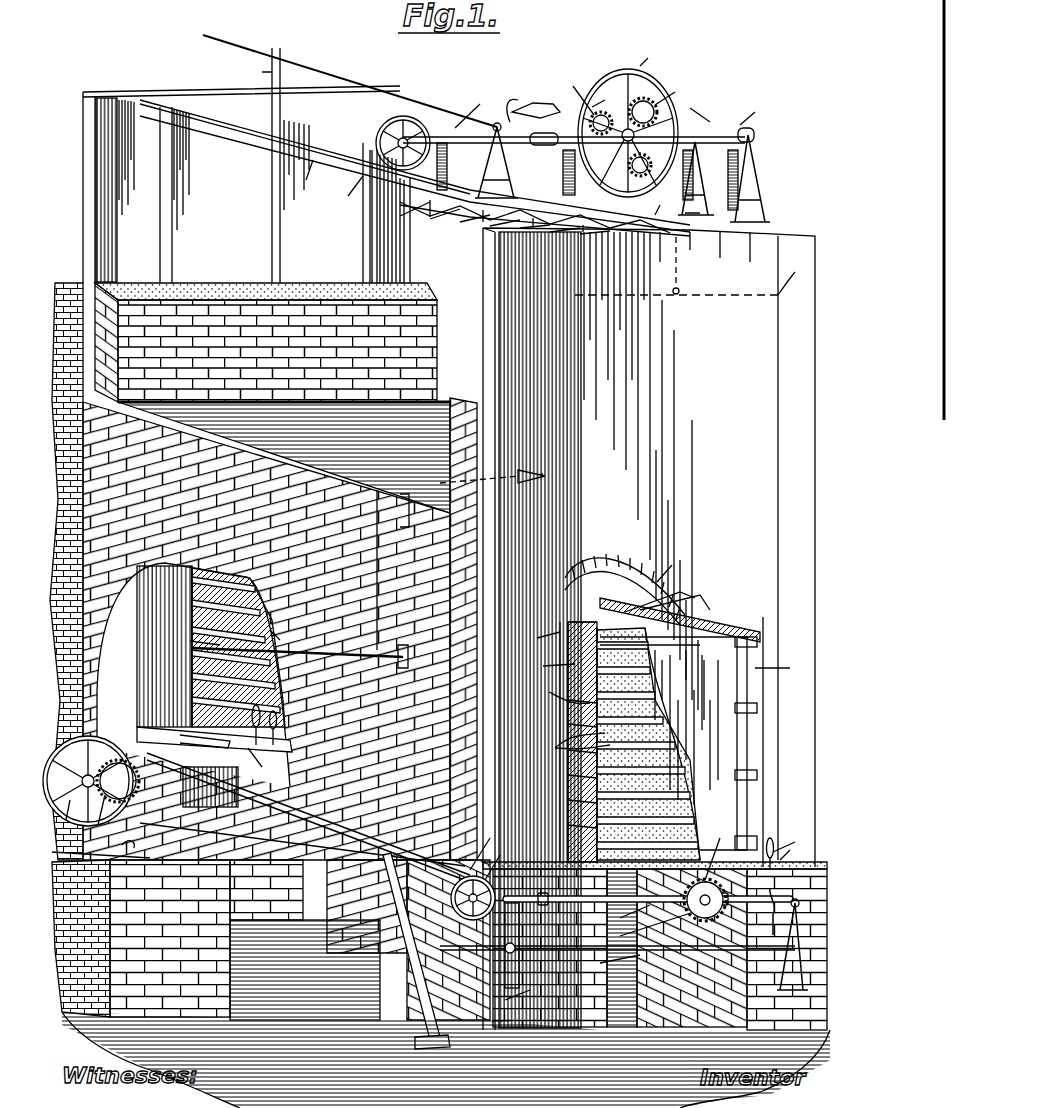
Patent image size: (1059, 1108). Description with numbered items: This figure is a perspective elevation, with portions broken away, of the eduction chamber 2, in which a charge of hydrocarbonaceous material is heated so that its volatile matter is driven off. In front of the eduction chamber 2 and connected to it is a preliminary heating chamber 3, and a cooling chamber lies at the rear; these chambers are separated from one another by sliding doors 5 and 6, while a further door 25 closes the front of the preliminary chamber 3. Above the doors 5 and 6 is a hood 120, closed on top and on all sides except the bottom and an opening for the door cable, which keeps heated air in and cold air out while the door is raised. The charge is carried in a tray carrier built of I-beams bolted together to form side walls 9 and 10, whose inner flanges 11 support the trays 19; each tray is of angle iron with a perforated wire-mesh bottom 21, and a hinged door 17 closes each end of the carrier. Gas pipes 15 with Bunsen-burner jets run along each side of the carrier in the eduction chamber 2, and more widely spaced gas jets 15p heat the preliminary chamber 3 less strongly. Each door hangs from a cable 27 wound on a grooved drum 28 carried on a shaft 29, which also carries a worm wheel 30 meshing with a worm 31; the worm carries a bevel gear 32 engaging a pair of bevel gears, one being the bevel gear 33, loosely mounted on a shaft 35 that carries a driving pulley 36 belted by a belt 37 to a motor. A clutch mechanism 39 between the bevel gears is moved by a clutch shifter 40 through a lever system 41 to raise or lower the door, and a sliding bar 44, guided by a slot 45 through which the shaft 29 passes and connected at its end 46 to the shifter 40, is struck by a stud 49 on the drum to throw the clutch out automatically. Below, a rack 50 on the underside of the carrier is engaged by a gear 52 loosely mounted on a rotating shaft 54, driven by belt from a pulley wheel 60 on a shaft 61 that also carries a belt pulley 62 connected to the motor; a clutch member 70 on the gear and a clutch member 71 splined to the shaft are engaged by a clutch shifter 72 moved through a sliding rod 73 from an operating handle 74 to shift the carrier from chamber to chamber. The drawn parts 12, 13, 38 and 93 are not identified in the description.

The eduction chamber 2 is at (625, 588).
The preliminary heating chamber 3 is at (305, 651).
The door 5 is at (193, 675).
The door 6 is at (649, 629).
The side wall 9 is at (700, 742).
The side wall 10 is at (563, 742).
The inner flanges 11 is at (564, 755).
The rod 12 is at (369, 569).
The grate 13 is at (191, 660).
The gas pipes 15 is at (214, 756).
The gas jets 15p is at (788, 849).
The door 17 is at (686, 727).
The trays 19 is at (614, 744).
The perforated bottom 21 is at (680, 618).
The door 25 is at (667, 596).
The cables 27 is at (457, 128).
The cable drum 28 is at (701, 109).
The shaft 29 is at (749, 164).
The worm wheel 30 is at (661, 101).
The worm 31 is at (679, 178).
The bevel gear 32 is at (544, 156).
The bevel gear 33 is at (506, 160).
The shaft 35 is at (574, 115).
The driving pulley 36 is at (347, 194).
The belt 37 is at (363, 157).
The pulley 38 is at (485, 881).
The clutch mechanism 39 is at (489, 848).
The clutch shifter 40 is at (536, 108).
The lever system 41 is at (532, 325).
The sliding bar 44 is at (628, 119).
The slot 45 is at (644, 165).
The end of sliding bar 46 is at (519, 102).
The stud 49 is at (580, 102).
The rack 50 is at (792, 889).
The gear 52 is at (602, 945).
The rotating shaft 54 is at (648, 908).
The pulley wheel 60 is at (109, 805).
The shaft 61 is at (88, 788).
The belt pulley 62 is at (106, 847).
The clutch member 70 is at (705, 870).
The clutch member 71 is at (792, 934).
The clutch shifter 72 is at (633, 946).
The sliding rod 73 is at (460, 951).
The operating handle 74 is at (305, 817).
The pier 93 is at (216, 940).
The hood 120 is at (411, 165).